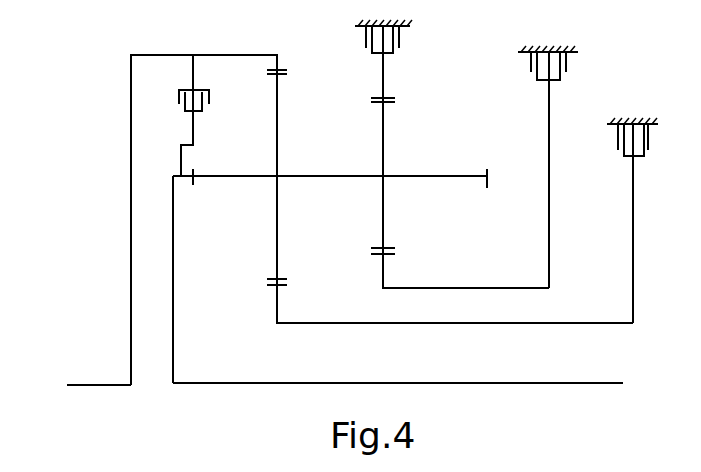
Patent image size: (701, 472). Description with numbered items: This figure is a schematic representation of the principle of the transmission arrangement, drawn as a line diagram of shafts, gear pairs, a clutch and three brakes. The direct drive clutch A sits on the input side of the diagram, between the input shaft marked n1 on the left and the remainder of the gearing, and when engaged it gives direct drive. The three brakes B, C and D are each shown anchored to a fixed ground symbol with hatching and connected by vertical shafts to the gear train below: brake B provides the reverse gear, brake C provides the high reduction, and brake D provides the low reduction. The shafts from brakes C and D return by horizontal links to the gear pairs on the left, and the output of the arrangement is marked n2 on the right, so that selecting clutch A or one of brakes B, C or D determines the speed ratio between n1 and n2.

The direct drive clutch A is at (201, 111).
The brake B is at (390, 43).
The brake C is at (552, 167).
The brake D is at (641, 220).
The input speed n1 is at (34, 370).
The output speed n2 is at (637, 365).